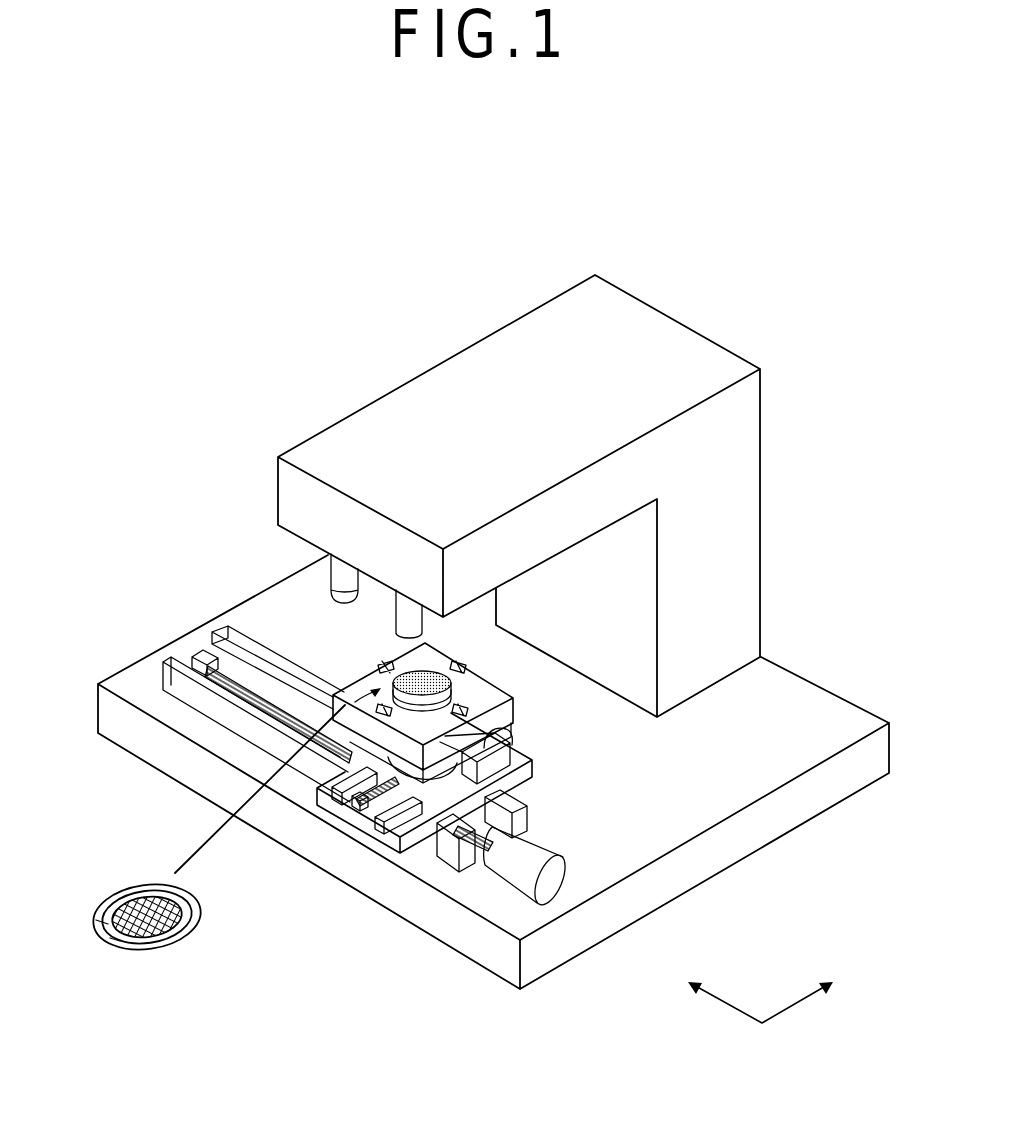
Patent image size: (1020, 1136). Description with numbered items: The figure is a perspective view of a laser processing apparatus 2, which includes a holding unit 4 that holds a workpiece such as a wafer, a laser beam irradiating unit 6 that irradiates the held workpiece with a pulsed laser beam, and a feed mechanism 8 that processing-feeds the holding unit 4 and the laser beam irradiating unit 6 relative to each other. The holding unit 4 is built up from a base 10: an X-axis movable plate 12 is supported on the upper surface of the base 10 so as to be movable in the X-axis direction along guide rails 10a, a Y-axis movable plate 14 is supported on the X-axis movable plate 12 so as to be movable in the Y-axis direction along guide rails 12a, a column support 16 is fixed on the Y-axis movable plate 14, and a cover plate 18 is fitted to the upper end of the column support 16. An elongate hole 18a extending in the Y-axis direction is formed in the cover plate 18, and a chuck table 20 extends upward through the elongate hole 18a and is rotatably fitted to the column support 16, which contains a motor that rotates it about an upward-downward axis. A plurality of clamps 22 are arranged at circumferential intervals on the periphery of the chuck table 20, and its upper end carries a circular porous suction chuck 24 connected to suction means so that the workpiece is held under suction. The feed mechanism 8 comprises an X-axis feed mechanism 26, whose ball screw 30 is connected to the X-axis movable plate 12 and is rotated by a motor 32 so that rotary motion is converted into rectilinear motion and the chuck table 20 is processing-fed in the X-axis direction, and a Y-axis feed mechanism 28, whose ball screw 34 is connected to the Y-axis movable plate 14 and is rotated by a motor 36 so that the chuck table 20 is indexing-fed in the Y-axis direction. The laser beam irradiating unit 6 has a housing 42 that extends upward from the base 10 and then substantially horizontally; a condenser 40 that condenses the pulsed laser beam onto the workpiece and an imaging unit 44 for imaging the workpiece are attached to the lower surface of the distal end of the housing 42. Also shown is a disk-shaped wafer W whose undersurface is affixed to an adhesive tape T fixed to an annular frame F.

The laser processing apparatus 2 is at (180, 421).
The holding unit 4 is at (433, 996).
The laser beam irradiating unit 6 is at (766, 461).
The feed mechanism 8 is at (628, 745).
The base 10 is at (760, 770).
The guide rails 10a is at (223, 633).
The X-axis movable plate 12 is at (392, 838).
The guide rails 12a is at (340, 795).
The Y-axis movable plate 14 is at (452, 835).
The column support 16 is at (430, 845).
The cover plate 18 is at (345, 722).
The elongate hole 18a is at (490, 695).
The chuck table 20 is at (375, 657).
The clamps 22 is at (458, 665).
The suction chuck 24 is at (420, 678).
The X-axis feed mechanism 26 is at (585, 790).
The Y-axis feed mechanism 28 is at (585, 724).
The ball screw 30 is at (478, 812).
The motor 32 is at (525, 855).
The ball screw 34 is at (490, 760).
The motor 36 is at (500, 732).
The condenser 40 is at (343, 571).
The housing 42 is at (735, 579).
The imaging unit 44 is at (408, 610).
The wafer W is at (120, 898).
The annular frame F is at (147, 889).
The adhesive tape T is at (94, 909).